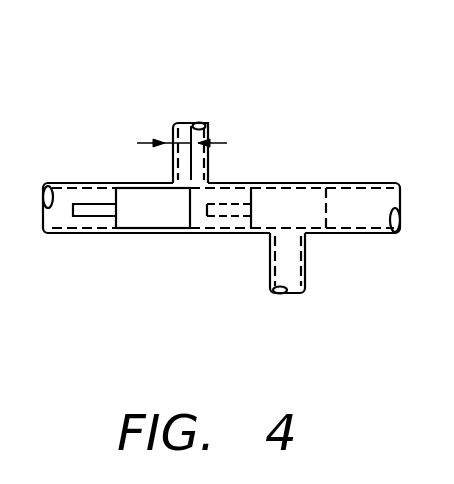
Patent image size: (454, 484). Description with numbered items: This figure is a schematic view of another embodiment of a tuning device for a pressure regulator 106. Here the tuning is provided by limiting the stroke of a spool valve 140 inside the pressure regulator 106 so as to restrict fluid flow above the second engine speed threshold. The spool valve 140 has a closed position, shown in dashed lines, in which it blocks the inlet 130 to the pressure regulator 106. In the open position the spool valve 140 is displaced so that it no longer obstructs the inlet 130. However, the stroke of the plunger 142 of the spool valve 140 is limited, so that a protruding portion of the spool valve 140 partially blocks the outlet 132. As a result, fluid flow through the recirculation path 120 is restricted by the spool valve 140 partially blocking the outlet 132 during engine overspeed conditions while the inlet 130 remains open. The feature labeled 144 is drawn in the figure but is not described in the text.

The tubing assembly 106 is at (197, 257).
The inlet port 120 is at (195, 108).
The outlet port 130 is at (306, 265).
The port opening 132 is at (209, 122).
The seal block 140 is at (148, 200).
The passage 142 is at (75, 217).
The lumen 144 is at (183, 140).